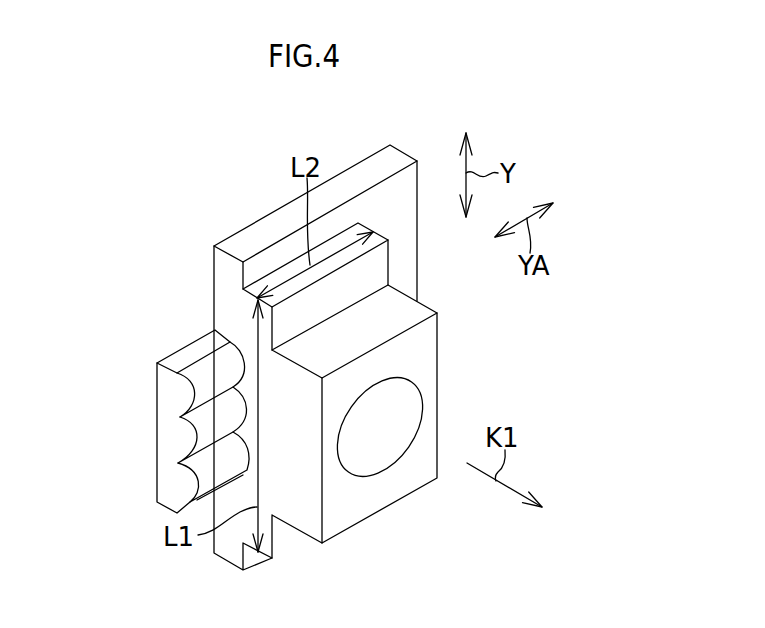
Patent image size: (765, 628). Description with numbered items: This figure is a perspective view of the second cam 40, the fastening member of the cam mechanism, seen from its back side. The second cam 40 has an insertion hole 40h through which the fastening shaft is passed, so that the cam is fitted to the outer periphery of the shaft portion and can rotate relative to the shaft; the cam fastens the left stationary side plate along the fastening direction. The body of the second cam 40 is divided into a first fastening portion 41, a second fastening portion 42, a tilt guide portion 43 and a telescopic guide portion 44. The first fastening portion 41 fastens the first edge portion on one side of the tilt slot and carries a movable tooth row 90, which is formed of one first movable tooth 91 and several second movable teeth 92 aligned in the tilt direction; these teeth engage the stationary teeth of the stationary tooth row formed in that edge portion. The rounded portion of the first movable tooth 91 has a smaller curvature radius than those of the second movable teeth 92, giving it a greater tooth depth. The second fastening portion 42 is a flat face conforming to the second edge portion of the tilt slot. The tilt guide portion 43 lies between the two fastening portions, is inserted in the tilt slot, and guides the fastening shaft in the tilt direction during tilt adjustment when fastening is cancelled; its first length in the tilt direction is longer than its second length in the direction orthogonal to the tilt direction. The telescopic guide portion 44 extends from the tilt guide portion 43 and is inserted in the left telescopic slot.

The second cam 40 is at (254, 221).
The insertion hole 40h is at (378, 455).
The first fastening portion 41 is at (150, 400).
The second fastening portion 42 is at (408, 255).
The tilt guide portion 43 is at (372, 268).
The telescopic guide portion 44 is at (388, 421).
The movable tooth row 90 is at (150, 424).
The first movable tooth 91 is at (176, 467).
The second movable teeth 92 is at (186, 404).